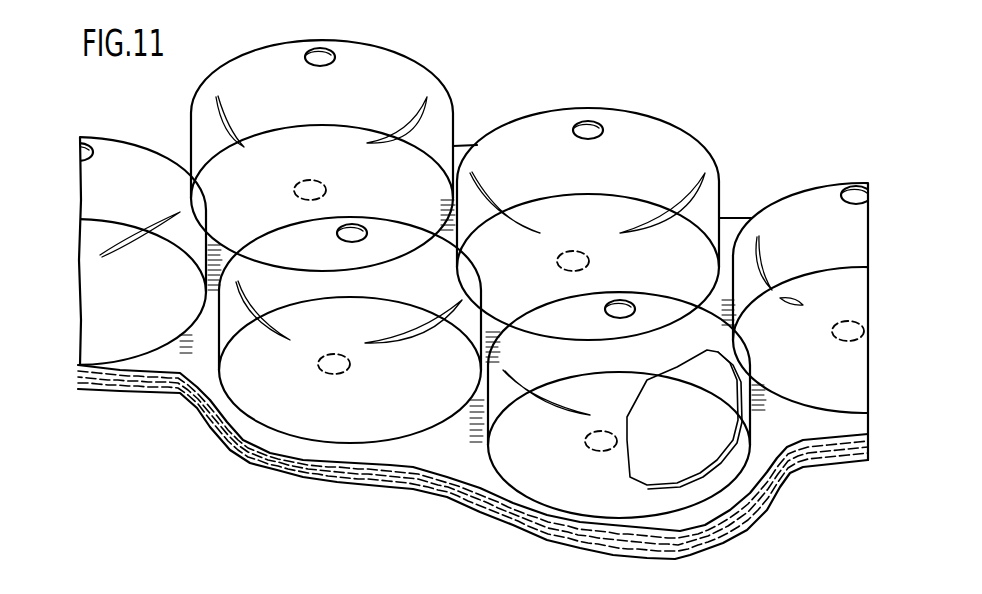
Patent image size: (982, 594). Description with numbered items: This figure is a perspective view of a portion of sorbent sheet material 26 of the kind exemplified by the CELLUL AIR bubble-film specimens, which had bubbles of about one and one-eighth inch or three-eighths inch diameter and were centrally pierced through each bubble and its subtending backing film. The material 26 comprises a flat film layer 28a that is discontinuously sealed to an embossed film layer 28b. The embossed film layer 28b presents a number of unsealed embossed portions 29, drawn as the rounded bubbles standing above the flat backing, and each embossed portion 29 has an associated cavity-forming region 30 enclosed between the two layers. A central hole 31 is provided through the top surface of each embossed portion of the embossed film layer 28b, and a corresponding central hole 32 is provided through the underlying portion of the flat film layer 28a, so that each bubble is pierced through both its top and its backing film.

The material 26 is at (63, 298).
The flat film layer 28a is at (104, 392).
The embossed film layer 28b is at (214, 369).
The unsealed embossed portions 29 is at (512, 120).
The cavity-forming regions 30 is at (700, 425).
The central hole 31 is at (306, 54).
The central hole 32 is at (293, 188).